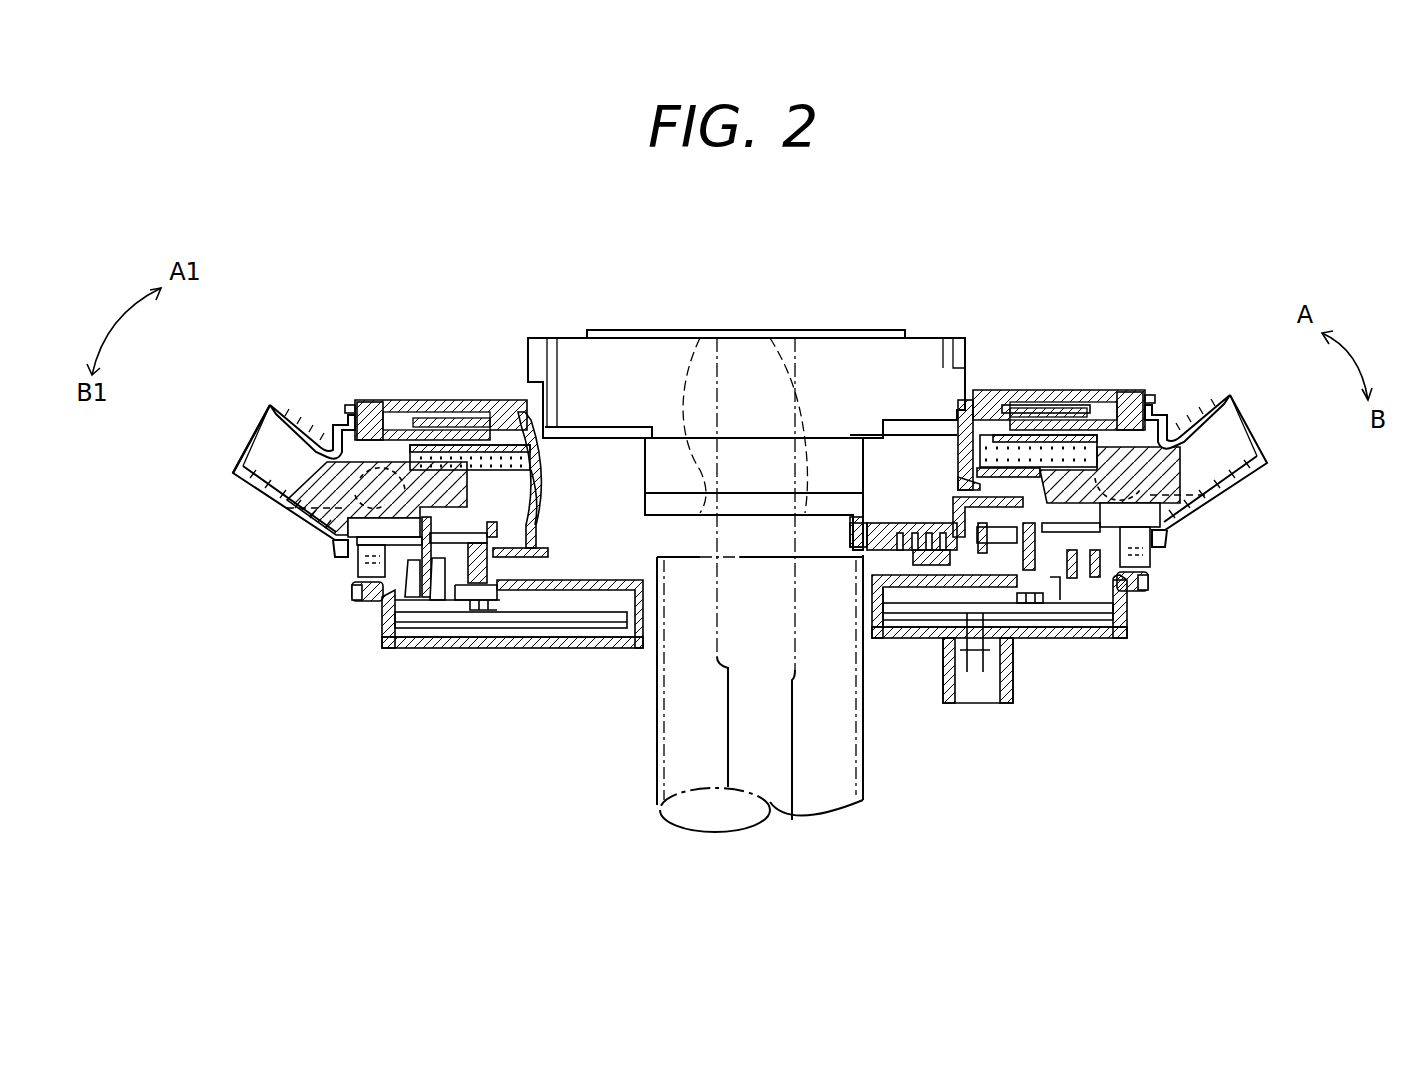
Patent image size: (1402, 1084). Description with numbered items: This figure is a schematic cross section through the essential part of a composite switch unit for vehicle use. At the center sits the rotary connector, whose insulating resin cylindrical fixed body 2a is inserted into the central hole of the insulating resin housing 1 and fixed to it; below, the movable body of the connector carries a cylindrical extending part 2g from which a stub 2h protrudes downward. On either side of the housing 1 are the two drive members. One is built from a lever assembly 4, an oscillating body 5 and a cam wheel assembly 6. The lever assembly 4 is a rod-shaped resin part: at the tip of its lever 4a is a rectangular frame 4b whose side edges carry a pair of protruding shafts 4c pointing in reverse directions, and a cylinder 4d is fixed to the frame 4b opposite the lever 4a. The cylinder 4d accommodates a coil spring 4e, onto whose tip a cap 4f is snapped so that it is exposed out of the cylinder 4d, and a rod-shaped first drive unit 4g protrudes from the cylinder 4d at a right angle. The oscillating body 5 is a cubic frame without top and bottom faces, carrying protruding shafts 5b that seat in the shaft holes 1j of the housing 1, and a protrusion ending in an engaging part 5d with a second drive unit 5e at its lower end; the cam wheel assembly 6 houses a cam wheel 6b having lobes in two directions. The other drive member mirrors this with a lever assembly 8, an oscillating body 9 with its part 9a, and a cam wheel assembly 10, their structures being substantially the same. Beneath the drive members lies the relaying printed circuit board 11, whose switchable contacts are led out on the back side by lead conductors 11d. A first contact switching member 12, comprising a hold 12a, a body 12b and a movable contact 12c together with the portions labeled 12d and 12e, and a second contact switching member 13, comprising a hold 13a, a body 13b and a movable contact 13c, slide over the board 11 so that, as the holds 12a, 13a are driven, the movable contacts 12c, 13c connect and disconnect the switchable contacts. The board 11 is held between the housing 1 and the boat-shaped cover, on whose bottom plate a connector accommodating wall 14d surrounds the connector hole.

The housing 1 is at (458, 398).
The shaft holes 1j is at (348, 402).
The fixed body 2a is at (672, 368).
The cylindrical extending part 2g is at (700, 375).
The stub 2h is at (800, 470).
The lever assembly 4 is at (397, 635).
The lever 4a is at (262, 495).
The rectangular frame 4b is at (330, 428).
The protruding shafts 4c is at (340, 556).
The cylinder 4d is at (1055, 392).
The coil spring 4e is at (486, 520).
The cap 4f is at (538, 492).
The first drive unit 4g is at (370, 580).
The oscillating body 5 is at (1085, 392).
The protruding shafts 5b is at (372, 400).
The engaging part 5d is at (857, 517).
The second drive unit 5e is at (1026, 520).
The cam wheel assembly 6 is at (962, 400).
The cam wheel 6b is at (547, 478).
The lever assembly 8 is at (235, 433).
The oscillating body 9 is at (384, 415).
The foot 9a is at (500, 556).
The cam wheel assembly 10 is at (510, 398).
The relaying printed circuit board 11 is at (522, 625).
The lead conductors 11d is at (428, 635).
The first contact switching member 12 is at (385, 613).
The hold 12a is at (1130, 605).
The body 12b is at (1125, 615).
The movable contact 12c is at (1120, 625).
The hatched bar 12d is at (930, 545).
The cover wall 12e is at (905, 640).
The second contact switching member 13 is at (472, 612).
The hold 13a is at (1015, 625).
The body 13b is at (1030, 625).
The movable contact 13c is at (1055, 625).
The connector accommodating wall 14d is at (955, 650).